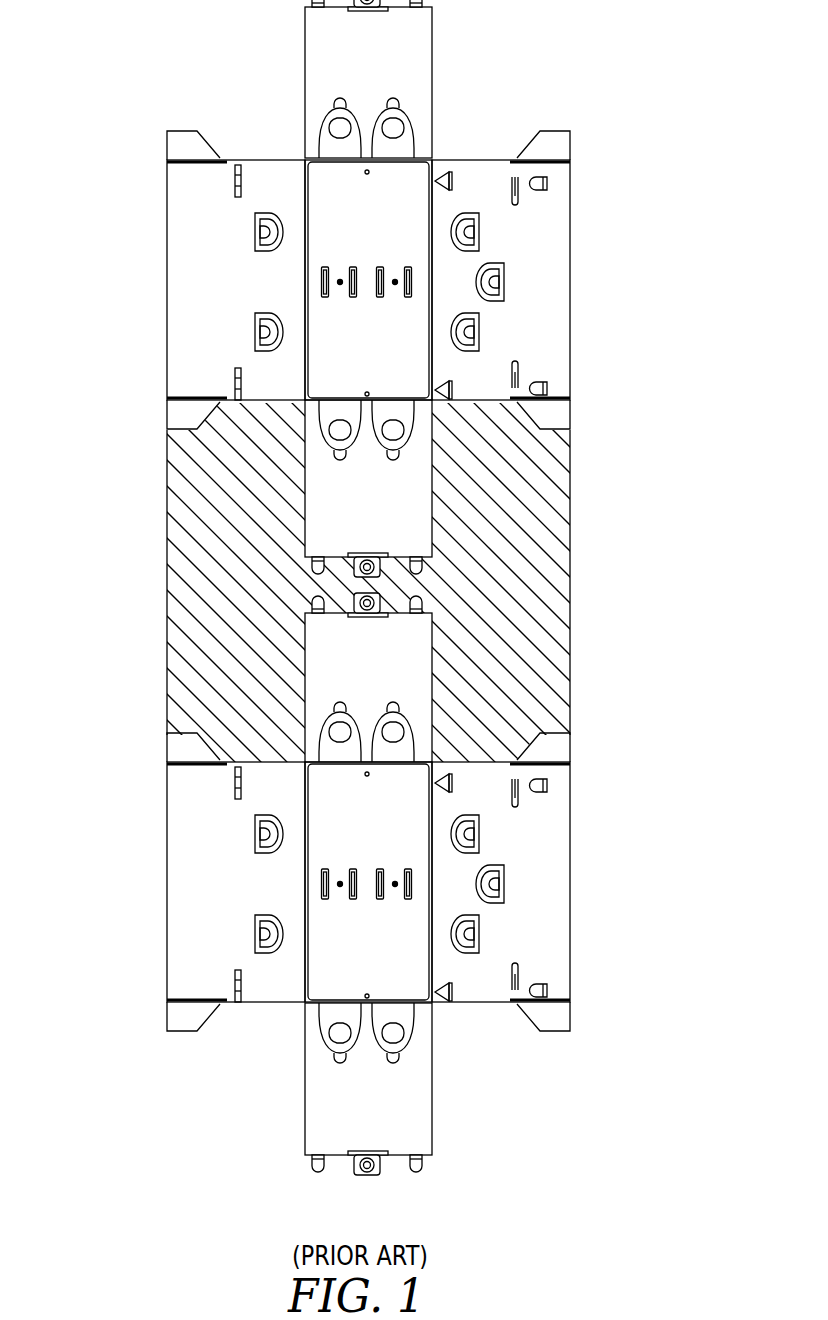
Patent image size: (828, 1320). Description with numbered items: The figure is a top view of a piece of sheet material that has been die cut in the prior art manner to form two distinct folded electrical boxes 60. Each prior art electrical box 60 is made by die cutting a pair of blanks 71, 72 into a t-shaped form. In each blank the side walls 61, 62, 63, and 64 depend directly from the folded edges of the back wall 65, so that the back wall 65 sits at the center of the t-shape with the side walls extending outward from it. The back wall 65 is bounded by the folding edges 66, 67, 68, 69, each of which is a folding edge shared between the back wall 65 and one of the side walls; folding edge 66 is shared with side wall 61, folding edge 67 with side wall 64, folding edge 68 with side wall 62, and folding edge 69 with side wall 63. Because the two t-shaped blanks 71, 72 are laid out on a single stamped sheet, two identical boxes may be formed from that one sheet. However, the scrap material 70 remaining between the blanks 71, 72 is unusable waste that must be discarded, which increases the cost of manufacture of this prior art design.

The electrical box 60 is at (390, 469).
The side wall 61 is at (525, 948).
The side wall 62 is at (190, 957).
The side wall 63 is at (248, 677).
The side wall 64 is at (315, 1089).
The back wall 65 is at (243, 882).
The folding edge 66 is at (432, 962).
The folding edge 67 is at (305, 1003).
The folding edge 68 is at (303, 887).
The folding edge 69 is at (300, 757).
The scrap material 70 is at (525, 595).
The blank 71 is at (147, 312).
The blank 72 is at (567, 918).